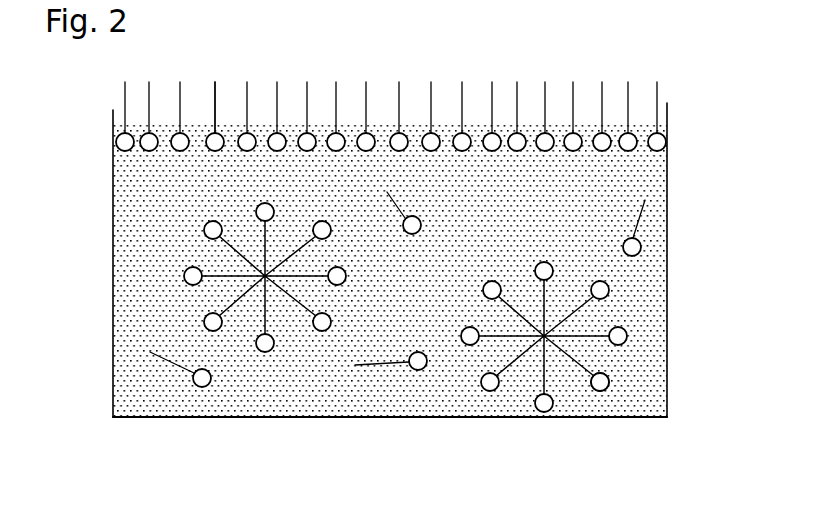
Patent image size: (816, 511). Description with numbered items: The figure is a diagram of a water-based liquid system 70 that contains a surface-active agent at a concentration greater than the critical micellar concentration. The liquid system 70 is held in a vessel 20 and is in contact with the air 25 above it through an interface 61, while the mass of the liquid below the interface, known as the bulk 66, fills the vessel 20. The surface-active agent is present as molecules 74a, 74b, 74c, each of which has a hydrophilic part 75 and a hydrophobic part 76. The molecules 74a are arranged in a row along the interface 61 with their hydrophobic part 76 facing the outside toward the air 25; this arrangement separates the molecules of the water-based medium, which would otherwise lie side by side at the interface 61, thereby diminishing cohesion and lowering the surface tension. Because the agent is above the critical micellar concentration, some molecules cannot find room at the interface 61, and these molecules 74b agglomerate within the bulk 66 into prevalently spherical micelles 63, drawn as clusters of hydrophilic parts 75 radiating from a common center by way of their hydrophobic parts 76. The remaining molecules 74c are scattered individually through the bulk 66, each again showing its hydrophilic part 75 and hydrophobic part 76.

The vessel 20 is at (318, 420).
The air 25 is at (394, 40).
The interface 61 is at (437, 125).
The micelles 63 is at (173, 266).
The bulk 66 is at (192, 181).
The water-based liquid system 70 is at (428, 287).
The molecules arranged on the interface 74a is at (215, 84).
The molecules forming micelles 74b is at (590, 384).
The molecules scattered through the bulk 74c is at (400, 204).
The hydrophilic part 75 is at (423, 382).
The hydrophobic part 76 is at (377, 364).